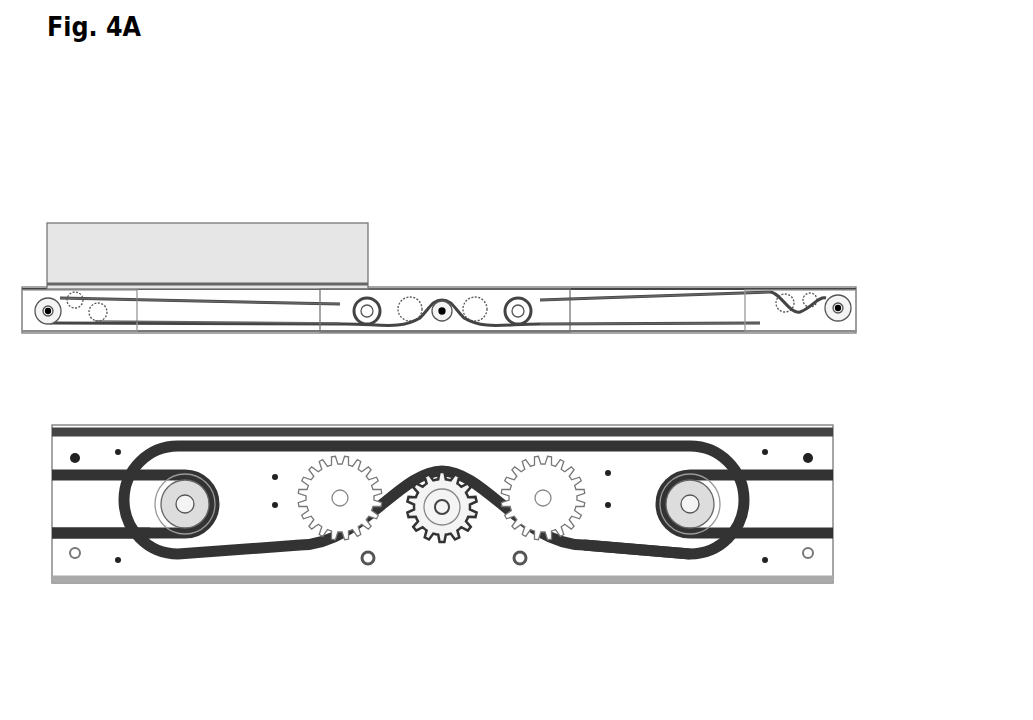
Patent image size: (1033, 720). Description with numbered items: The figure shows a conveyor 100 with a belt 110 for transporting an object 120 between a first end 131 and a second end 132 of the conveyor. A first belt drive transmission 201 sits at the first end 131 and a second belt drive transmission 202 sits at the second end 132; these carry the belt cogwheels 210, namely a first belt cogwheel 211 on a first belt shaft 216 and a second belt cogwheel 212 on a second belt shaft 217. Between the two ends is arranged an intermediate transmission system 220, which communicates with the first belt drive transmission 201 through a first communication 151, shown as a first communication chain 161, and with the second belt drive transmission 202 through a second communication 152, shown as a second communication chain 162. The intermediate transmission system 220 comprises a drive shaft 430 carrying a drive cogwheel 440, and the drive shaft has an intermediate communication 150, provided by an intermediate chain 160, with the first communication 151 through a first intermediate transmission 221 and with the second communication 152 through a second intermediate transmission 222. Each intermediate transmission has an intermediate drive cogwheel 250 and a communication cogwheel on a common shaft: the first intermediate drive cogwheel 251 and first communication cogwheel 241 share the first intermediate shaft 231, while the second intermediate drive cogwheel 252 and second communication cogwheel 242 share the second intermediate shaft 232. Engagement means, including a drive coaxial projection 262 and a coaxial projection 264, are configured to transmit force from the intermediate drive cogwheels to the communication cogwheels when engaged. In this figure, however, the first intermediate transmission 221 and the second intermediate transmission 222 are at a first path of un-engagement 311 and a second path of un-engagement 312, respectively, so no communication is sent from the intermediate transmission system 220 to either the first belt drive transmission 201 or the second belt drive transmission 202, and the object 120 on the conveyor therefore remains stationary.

The conveyor 100 is at (665, 145).
The belt 110 is at (650, 287).
The object 120 is at (248, 243).
The first end 131 is at (37, 232).
The second end 132 is at (858, 252).
The intermediate communication 150 is at (492, 326).
The first communication 151 is at (121, 477).
The second communication 152 is at (762, 472).
The intermediate chain 160 is at (398, 440).
The first communication chain 161 is at (182, 320).
The second communication chain 162 is at (822, 470).
The first belt drive transmission 201 is at (63, 278).
The second belt drive transmission 202 is at (821, 274).
The belt cogwheels 210 is at (63, 312).
The first belt cogwheel 211 is at (47, 314).
The second belt cogwheel 212 is at (846, 314).
The first belt shaft 216 is at (47, 312).
The second belt shaft 217 is at (840, 310).
The intermediate transmission system 220 is at (443, 275).
The first intermediate transmission 221 is at (194, 596).
The second intermediate transmission 222 is at (678, 606).
The first intermediate shaft 231 is at (200, 503).
The second intermediate shaft 232 is at (686, 510).
The first communication cogwheel 241 is at (187, 522).
The second communication cogwheel 242 is at (713, 513).
The intermediate drive cogwheel 250 is at (458, 540).
The first intermediate drive cogwheel 251 is at (228, 472).
The second intermediate drive cogwheel 252 is at (737, 511).
The drive coaxial projection 262 is at (652, 520).
The coaxial projection 264 is at (140, 523).
The first path of un-engagement 311 is at (188, 554).
The second path of un-engagement 312 is at (699, 562).
The drive shaft 430 is at (442, 507).
The drive cogwheel 440 is at (437, 537).